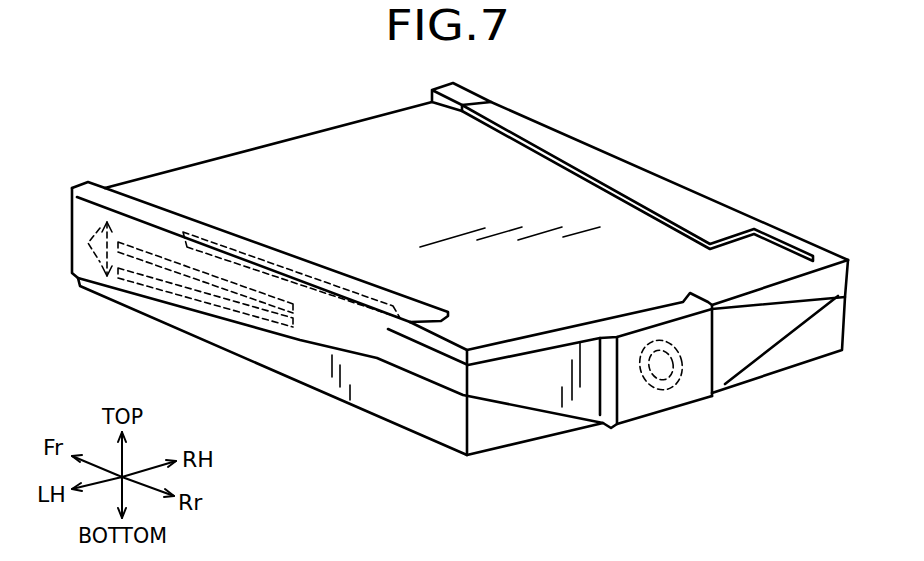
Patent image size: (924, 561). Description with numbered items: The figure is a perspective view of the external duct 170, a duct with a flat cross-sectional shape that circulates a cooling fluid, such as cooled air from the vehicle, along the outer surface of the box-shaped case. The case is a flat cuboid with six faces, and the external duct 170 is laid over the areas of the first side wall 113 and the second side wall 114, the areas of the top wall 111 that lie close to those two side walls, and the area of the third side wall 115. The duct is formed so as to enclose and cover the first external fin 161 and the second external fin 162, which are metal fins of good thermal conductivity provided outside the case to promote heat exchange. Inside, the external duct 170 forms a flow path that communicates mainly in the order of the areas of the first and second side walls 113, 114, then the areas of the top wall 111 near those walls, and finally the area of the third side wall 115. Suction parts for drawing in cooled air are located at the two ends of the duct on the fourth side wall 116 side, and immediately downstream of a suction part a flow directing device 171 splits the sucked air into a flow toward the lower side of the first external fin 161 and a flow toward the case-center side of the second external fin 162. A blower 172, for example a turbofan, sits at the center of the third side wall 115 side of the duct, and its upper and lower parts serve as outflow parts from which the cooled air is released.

The top wall 111 is at (328, 157).
The first side wall 113 is at (273, 360).
The second side wall 114 is at (847, 318).
The third side wall 115 is at (513, 423).
The fourth side wall 116 is at (165, 172).
The first external fin 161 is at (170, 278).
The second external fin 162 is at (337, 270).
The external duct 170 is at (625, 173).
The flow directing device 171 is at (92, 222).
The blower 172 is at (668, 390).